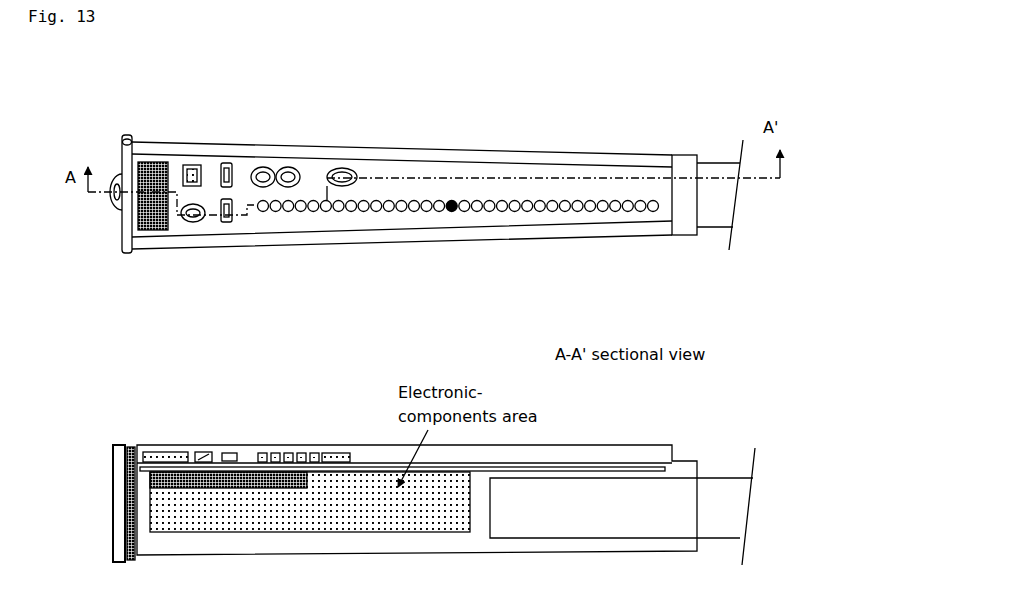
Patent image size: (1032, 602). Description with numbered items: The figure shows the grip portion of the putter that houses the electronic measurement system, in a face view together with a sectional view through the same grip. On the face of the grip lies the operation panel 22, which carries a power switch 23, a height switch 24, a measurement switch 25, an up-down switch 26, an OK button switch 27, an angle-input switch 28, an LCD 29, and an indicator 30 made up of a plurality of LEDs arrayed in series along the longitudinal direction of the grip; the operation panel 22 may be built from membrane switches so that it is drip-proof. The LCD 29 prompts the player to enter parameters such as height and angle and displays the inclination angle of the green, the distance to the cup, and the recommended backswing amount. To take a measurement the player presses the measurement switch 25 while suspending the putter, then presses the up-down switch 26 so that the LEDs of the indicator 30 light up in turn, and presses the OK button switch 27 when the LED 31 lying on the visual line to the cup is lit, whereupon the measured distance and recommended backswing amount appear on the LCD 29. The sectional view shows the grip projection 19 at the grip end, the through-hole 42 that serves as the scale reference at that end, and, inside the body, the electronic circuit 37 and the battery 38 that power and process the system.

The grip projection 19 is at (107, 463).
The operation panel 22 is at (535, 185).
The power switch 23 is at (210, 452).
The height switch 24 is at (230, 223).
The measurement switch 25 is at (226, 163).
The up-down switch 26 is at (289, 168).
The OK button switch 27 is at (189, 172).
The angle-input switch 28 is at (334, 453).
The LCD 29 is at (150, 193).
The indicator 30 is at (543, 212).
The LED 31 is at (453, 213).
The electronic circuit 37 is at (642, 425).
The battery 38 is at (287, 492).
The through-hole 42 is at (133, 537).